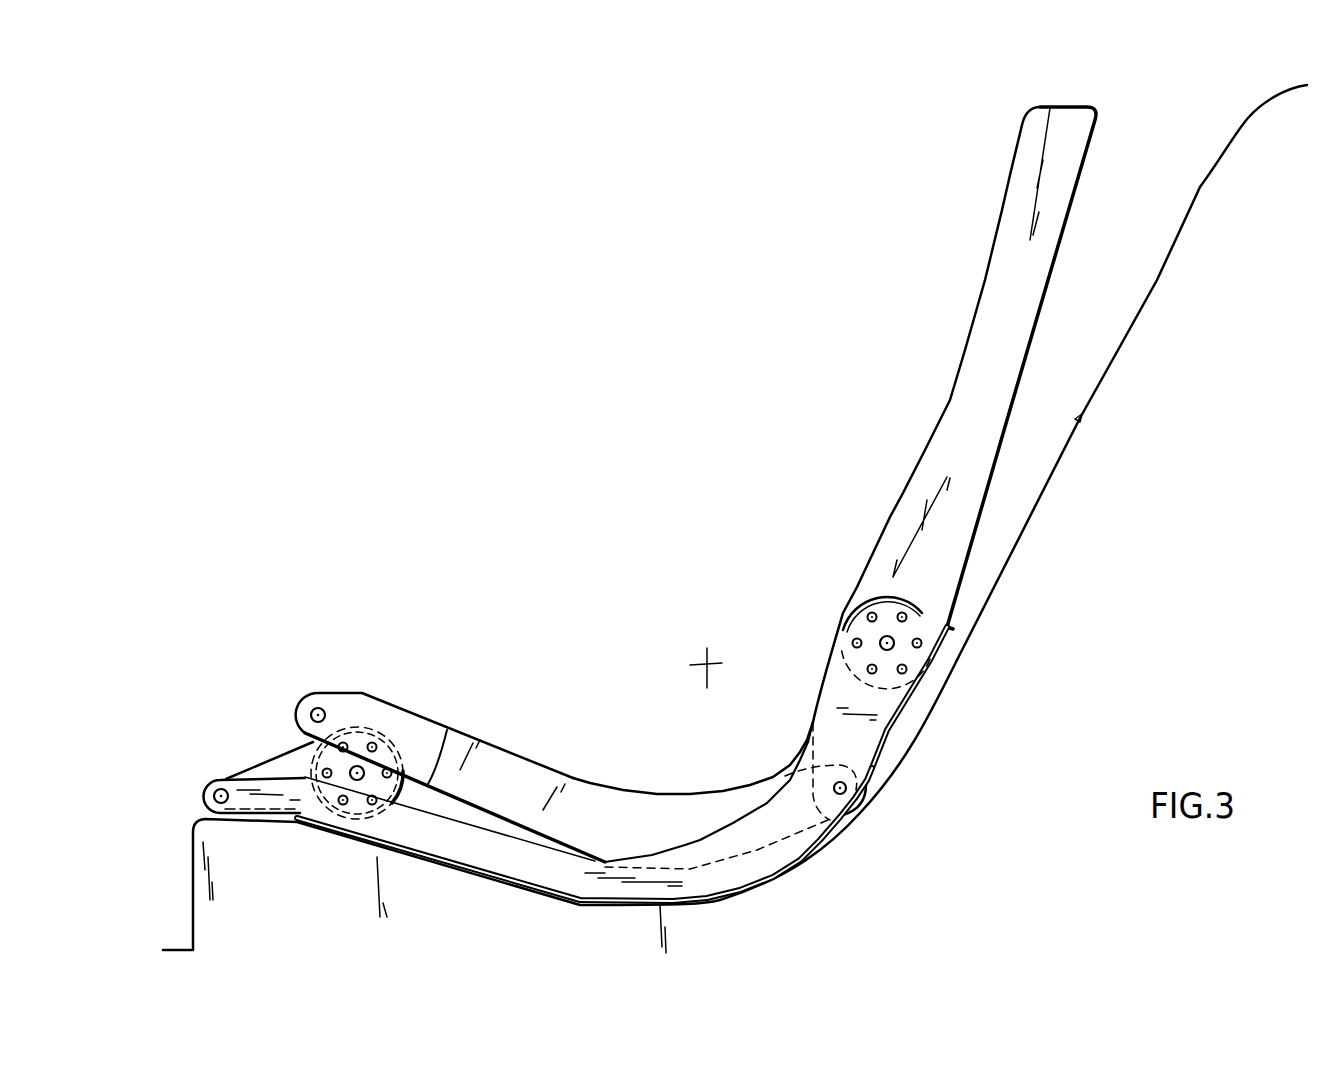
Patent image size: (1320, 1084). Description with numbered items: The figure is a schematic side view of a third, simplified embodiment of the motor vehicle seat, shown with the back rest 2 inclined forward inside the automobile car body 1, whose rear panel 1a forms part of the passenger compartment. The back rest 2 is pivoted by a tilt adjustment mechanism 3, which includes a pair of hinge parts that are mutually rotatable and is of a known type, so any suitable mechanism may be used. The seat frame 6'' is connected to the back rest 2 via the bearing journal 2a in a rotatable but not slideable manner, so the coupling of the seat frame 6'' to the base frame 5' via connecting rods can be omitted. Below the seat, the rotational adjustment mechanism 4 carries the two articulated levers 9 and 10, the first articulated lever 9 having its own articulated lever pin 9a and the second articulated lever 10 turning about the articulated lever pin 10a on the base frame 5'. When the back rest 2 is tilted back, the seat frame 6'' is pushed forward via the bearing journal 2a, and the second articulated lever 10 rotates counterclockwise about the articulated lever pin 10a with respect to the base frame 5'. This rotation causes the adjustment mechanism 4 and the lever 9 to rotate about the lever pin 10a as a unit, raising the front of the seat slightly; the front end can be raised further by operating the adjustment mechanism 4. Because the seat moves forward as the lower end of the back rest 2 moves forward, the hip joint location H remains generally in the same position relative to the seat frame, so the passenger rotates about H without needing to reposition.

The automobile car body 1 is at (1139, 282).
The rear panel 1a is at (1082, 417).
The back rest 2 is at (975, 300).
The bearing journal 2a is at (848, 790).
The tilt adjustment mechanism 3 is at (843, 612).
The rotational adjustment mechanism 4 is at (447, 730).
The base frame 5' is at (584, 871).
The seat frame 6'' is at (700, 803).
The articulated lever 9 is at (377, 687).
The articulated lever pin 9a is at (317, 707).
The second articulated lever 10 is at (260, 763).
The articulated lever pin 10a is at (225, 803).
The hip joint location H is at (700, 665).